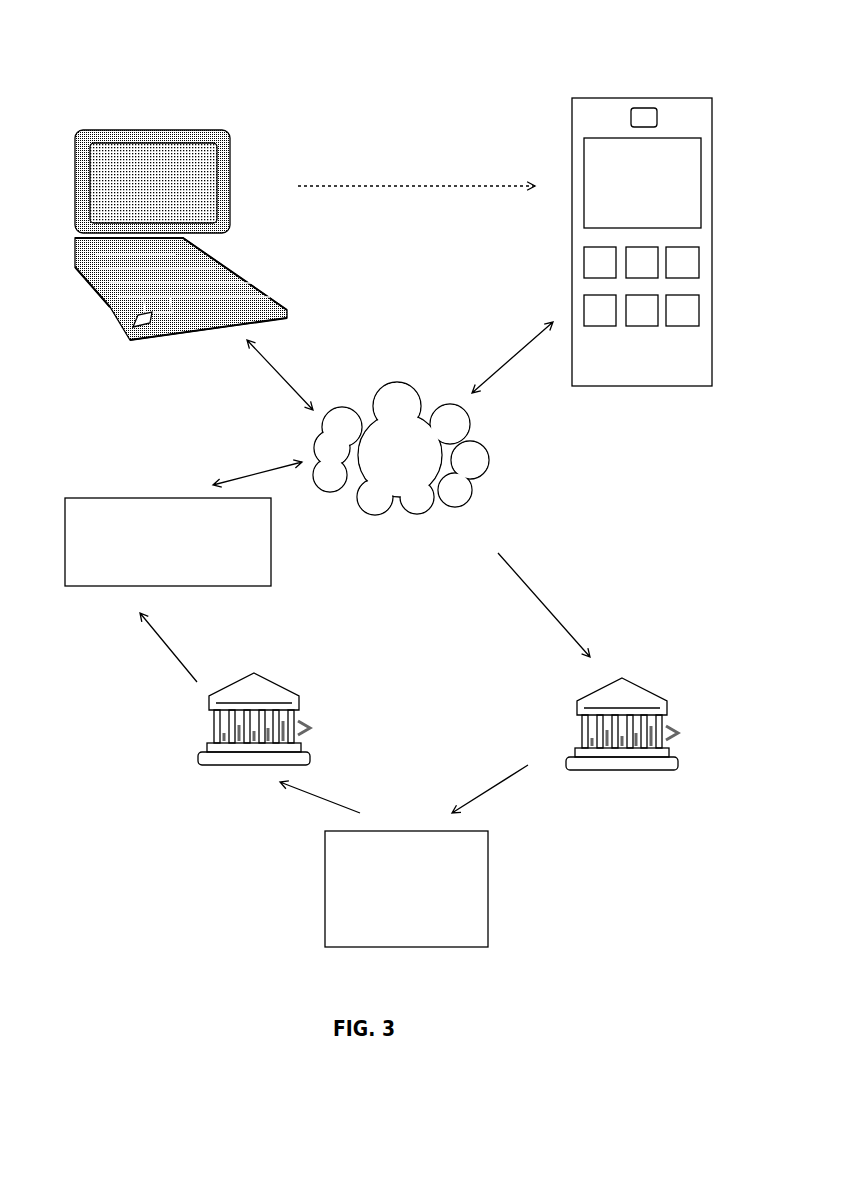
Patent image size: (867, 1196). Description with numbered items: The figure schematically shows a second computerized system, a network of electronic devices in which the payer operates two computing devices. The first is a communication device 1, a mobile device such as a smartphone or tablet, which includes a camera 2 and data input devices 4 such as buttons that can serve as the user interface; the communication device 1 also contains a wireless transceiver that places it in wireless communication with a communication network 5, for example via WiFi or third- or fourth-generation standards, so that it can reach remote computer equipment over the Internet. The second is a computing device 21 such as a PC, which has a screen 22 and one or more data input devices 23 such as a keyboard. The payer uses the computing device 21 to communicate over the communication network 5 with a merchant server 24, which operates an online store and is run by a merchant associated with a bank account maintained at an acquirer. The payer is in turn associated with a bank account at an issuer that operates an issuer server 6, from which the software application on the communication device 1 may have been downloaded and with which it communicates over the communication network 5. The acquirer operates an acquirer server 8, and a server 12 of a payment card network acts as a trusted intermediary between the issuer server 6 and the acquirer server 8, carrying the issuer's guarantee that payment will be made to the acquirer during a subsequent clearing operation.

The communication device 1 is at (615, 97).
The camera 2 is at (653, 109).
The data input devices 4 is at (722, 245).
The communication network 5 is at (401, 448).
The issuer server 6 is at (613, 770).
The acquirer server 8 is at (217, 765).
The payment card network server 12 is at (406, 889).
The computing device 21 is at (193, 132).
The screen 22 is at (150, 168).
The data input devices 23 is at (138, 317).
The merchant server 24 is at (168, 542).